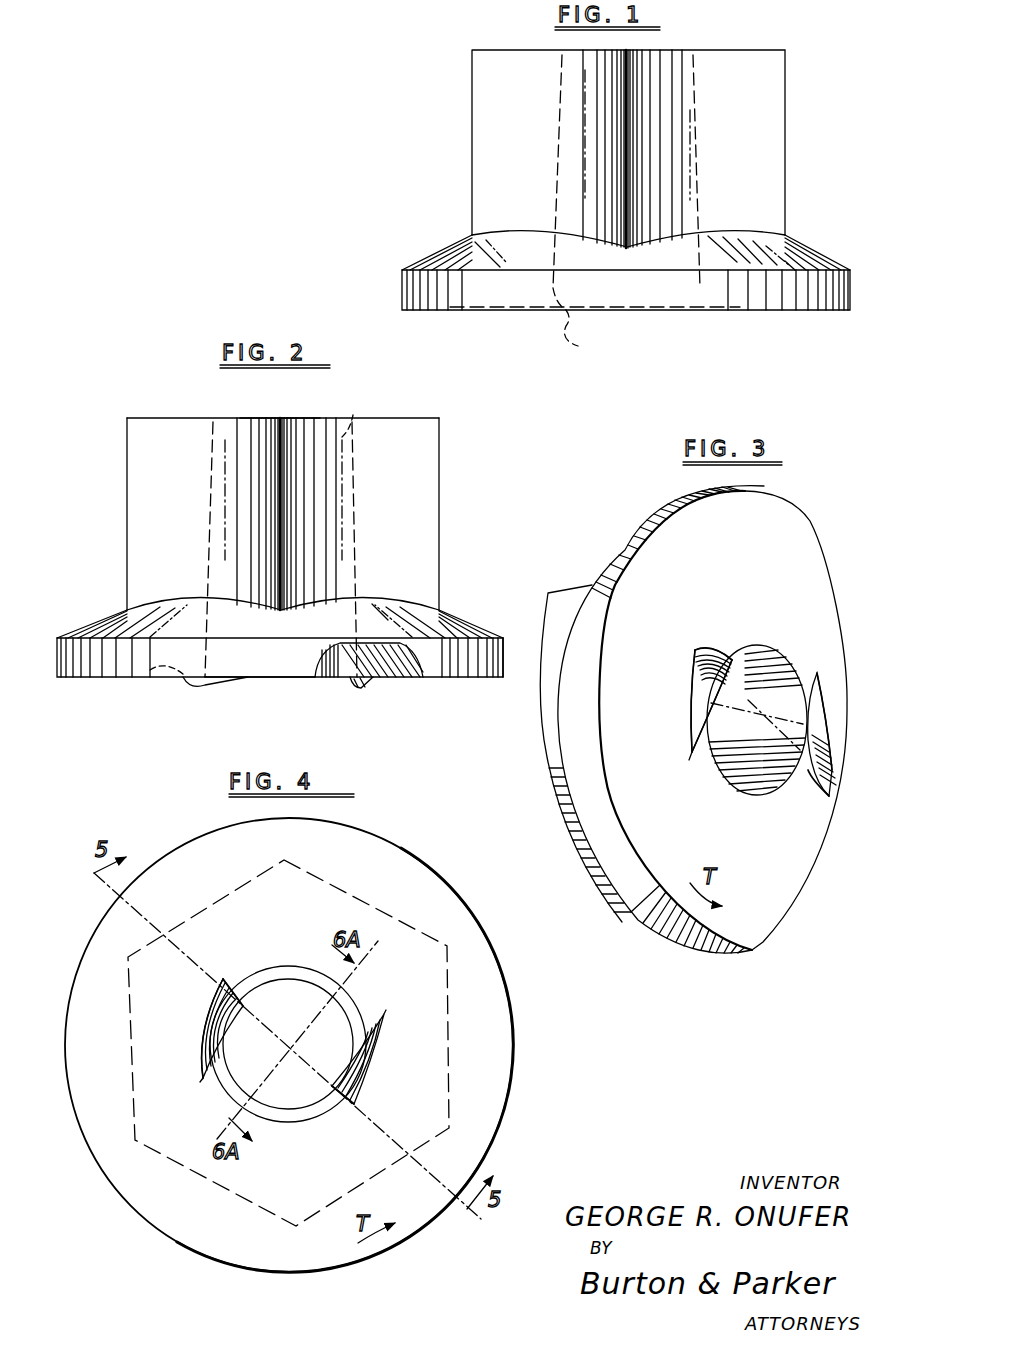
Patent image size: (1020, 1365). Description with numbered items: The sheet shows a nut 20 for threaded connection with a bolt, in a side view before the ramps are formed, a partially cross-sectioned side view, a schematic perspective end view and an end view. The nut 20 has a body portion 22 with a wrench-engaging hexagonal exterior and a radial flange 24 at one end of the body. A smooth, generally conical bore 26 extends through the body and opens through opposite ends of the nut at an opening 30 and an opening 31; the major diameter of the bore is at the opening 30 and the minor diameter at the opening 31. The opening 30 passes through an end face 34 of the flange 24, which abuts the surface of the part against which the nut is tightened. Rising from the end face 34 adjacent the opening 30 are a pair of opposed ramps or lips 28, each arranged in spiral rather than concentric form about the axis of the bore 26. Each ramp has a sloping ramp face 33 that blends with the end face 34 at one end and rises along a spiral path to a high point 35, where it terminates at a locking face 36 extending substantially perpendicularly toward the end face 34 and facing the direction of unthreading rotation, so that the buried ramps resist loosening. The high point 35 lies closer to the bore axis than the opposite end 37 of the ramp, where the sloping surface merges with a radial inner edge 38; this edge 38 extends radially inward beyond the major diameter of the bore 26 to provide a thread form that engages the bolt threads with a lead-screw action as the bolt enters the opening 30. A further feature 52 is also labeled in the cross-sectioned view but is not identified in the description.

In FIG. 2, the nut 20 is at (139, 412).
In FIG. 4, the nut 20 is at (514, 989).
In FIG. 1, the body portion 22 is at (487, 143).
In FIG. 2, the body portion 22 is at (130, 520).
In FIG. 4, the body portion 22 is at (129, 1104).
In FIG. 1, the radial flange 24 is at (812, 264).
In FIG. 2, the radial flange 24 is at (102, 614).
In FIG. 1, the bore 26 is at (578, 346).
In FIG. 2, the bore 26 is at (353, 415).
In FIG. 3, the bore 26 is at (761, 787).
In FIG. 4, the bore 26 is at (288, 1044).
In FIG. 2, the ramps or lips 28 is at (186, 686).
In FIG. 3, the ramps or lips 28 is at (686, 680).
In FIG. 4, the ramps or lips 28 is at (196, 1036).
In FIG. 2, the end opening of bore 30 is at (255, 680).
In FIG. 2, the opposite end opening of bore 31 is at (262, 418).
In FIG. 2, the sloping ramp face 33 is at (363, 675).
In FIG. 3, the sloping ramp face 33 is at (715, 688).
In FIG. 4, the sloping ramp face 33 is at (203, 1058).
In FIG. 2, the end face 34 is at (484, 678).
In FIG. 3, the end face 34 is at (824, 613).
In FIG. 4, the end face 34 is at (431, 889).
In FIG. 3, the high point 35 is at (728, 656).
In FIG. 4, the high point 35 is at (213, 985).
In FIG. 3, the locking face 36 is at (712, 647).
In FIG. 4, the locking face 36 is at (237, 985).
In FIG. 3, the opposite end of ramp 37 is at (689, 760).
In FIG. 4, the opposite end of ramp 37 is at (205, 1078).
In FIG. 2, the radial inner edge 38 is at (352, 679).
In FIG. 3, the radial inner edge 38 is at (727, 707).
In FIG. 4, the radial inner edge 38 is at (336, 1076).
In FIG. 2, the recess 52 is at (378, 670).